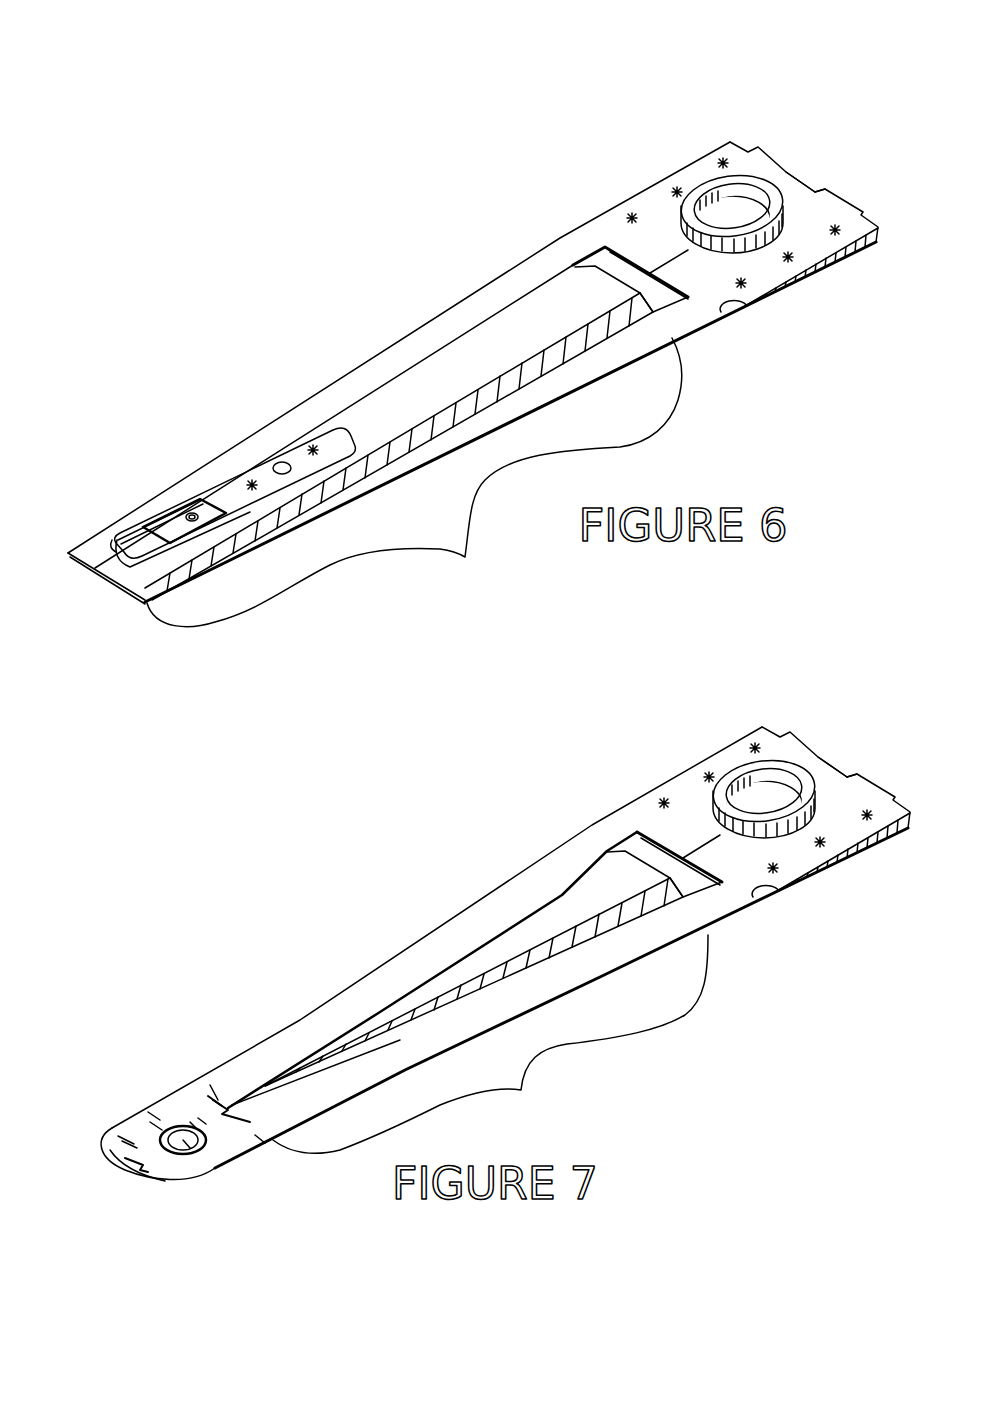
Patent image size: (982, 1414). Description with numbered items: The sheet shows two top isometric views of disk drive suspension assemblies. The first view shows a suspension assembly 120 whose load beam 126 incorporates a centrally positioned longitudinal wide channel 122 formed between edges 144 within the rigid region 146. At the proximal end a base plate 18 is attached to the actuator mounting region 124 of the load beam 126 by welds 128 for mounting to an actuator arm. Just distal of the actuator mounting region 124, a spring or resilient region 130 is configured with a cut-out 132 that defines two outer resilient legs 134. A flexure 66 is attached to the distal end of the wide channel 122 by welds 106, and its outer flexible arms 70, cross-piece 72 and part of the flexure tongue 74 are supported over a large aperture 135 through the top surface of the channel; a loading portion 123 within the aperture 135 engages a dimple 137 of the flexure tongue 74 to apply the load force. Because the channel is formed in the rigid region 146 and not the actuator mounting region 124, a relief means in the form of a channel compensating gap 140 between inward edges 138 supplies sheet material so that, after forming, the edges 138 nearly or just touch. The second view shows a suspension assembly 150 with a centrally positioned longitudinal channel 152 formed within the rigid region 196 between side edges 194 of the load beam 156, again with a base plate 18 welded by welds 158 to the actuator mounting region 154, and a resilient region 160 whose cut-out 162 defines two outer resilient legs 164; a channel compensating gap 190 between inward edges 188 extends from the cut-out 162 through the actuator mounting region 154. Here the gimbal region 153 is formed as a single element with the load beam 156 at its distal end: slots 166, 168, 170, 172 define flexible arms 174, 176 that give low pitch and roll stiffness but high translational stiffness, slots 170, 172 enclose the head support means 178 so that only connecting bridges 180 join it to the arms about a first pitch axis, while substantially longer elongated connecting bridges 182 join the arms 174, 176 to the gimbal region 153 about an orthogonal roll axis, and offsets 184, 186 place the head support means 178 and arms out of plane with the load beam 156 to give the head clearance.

In FIG. 6, the suspension assembly 120 is at (375, 212).
In FIG. 6, the wide channel 122 is at (463, 373).
In FIG. 6, the actuator mounting region 124 is at (768, 168).
In FIG. 6, the load beam 126 is at (505, 267).
In FIG. 6, the welds 128 is at (723, 158).
In FIG. 6, the resilient region 130 is at (563, 232).
In FIG. 6, the cut-out 132 is at (657, 292).
In FIG. 6, the resilient legs 134 is at (587, 240).
In FIG. 6, the inward edges 138 is at (787, 190).
In FIG. 6, the channel compensating gap 140 is at (793, 188).
In FIG. 6, the base plate 18 is at (848, 260).
In FIG. 7, the base plate 18 is at (878, 847).
In FIG. 6, the welds 106 is at (313, 447).
In FIG. 6, the flexure 66 is at (268, 457).
In FIG. 6, the outer flexible arms 70 is at (150, 522).
In FIG. 6, the dimple 137 is at (188, 513).
In FIG. 6, the edges 144 is at (358, 370).
In FIG. 6, the rigid region 146 is at (414, 482).
In FIG. 6, the loading portion 123 is at (210, 500).
In FIG. 6, the aperture 135 is at (140, 545).
In FIG. 6, the flexure tongue 74 is at (178, 525).
In FIG. 6, the cross-piece 72 is at (145, 540).
In FIG. 7, the suspension assembly 150 is at (455, 755).
In FIG. 7, the channel 152 is at (470, 965).
In FIG. 7, the gimbal region 153 is at (175, 1117).
In FIG. 7, the actuator mounting region 154 is at (802, 748).
In FIG. 7, the load beam 156 is at (510, 870).
In FIG. 7, the welds 158 is at (755, 748).
In FIG. 7, the resilient region 160 is at (595, 816).
In FIG. 7, the cut-out 162 is at (693, 880).
In FIG. 7, the resilient legs 164 is at (613, 830).
In FIG. 7, the slot 166 is at (260, 1140).
In FIG. 7, the slot 168 is at (166, 1158).
In FIG. 7, the slot 170 is at (173, 1165).
In FIG. 7, the slot 172 is at (203, 1155).
In FIG. 7, the flexible arm 174 is at (205, 1147).
In FIG. 7, the flexible arm 176 is at (155, 1133).
In FIG. 7, the head support means 178 is at (193, 1117).
In FIG. 7, the connecting bridges 180 is at (150, 1112).
In FIG. 7, the elongated connecting bridges 182 is at (232, 1100).
In FIG. 7, the offset 184 is at (130, 1162).
In FIG. 7, the offset 186 is at (220, 1117).
In FIG. 7, the inward edges 188 is at (814, 778).
In FIG. 7, the channel compensating gap 190 is at (828, 775).
In FIG. 7, the side edges 194 is at (448, 915).
In FIG. 7, the rigid region 196 is at (490, 1044).